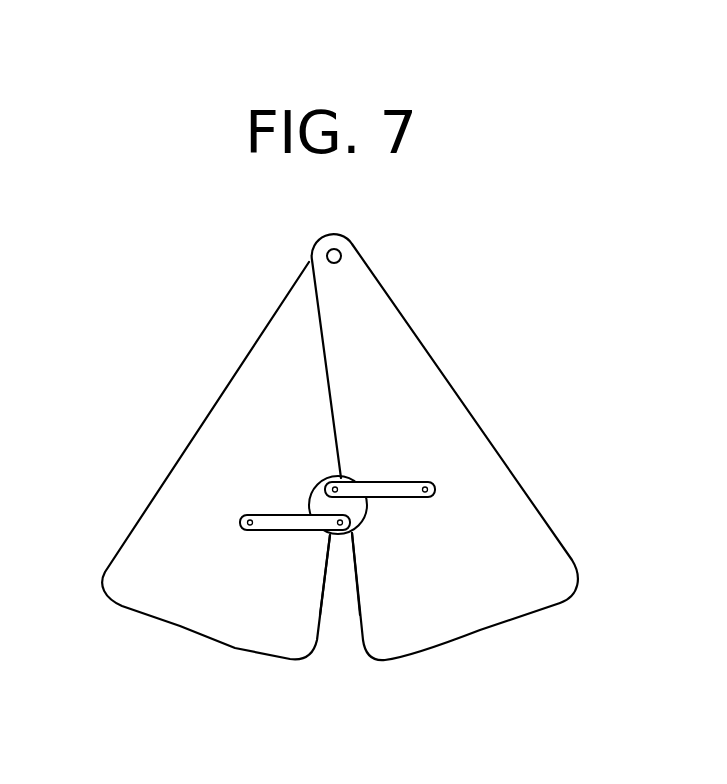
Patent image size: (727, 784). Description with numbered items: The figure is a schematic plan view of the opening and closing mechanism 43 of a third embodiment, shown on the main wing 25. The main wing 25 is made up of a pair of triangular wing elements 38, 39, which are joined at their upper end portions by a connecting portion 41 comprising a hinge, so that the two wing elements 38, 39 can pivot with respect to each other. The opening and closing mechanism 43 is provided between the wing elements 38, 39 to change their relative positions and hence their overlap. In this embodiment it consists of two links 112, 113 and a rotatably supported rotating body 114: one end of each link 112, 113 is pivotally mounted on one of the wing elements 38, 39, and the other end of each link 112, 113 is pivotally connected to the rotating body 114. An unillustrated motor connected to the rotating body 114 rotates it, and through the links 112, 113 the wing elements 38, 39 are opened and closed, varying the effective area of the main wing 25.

The main wing 25 is at (350, 469).
The wing element 38 is at (460, 430).
The wing element 39 is at (225, 420).
The connecting portion 41 is at (350, 255).
The opening and closing mechanism 43 is at (302, 552).
The link 112 is at (387, 481).
The link 113 is at (283, 514).
The rotating body 114 is at (356, 507).